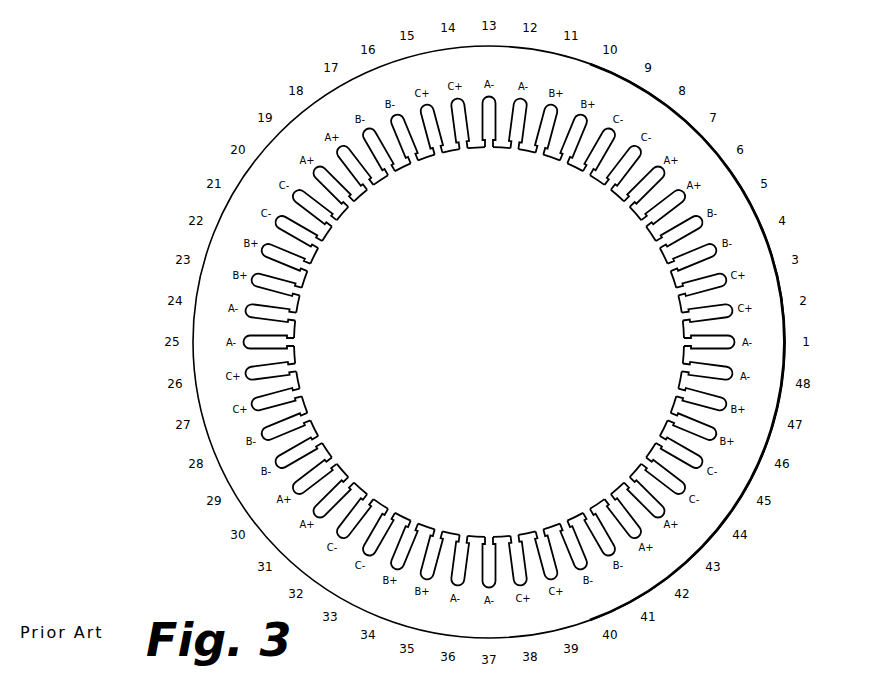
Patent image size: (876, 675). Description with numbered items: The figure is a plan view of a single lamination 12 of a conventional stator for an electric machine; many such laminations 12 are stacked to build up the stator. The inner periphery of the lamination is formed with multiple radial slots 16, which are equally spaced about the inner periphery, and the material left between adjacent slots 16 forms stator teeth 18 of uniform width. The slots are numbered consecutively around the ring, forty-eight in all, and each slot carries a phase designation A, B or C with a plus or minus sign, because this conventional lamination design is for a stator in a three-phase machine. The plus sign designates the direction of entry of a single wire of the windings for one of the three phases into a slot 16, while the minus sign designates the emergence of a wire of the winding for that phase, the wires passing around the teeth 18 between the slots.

The lamination 12 is at (777, 249).
The radial slot 16 is at (553, 115).
The stator tooth 18 is at (530, 138).